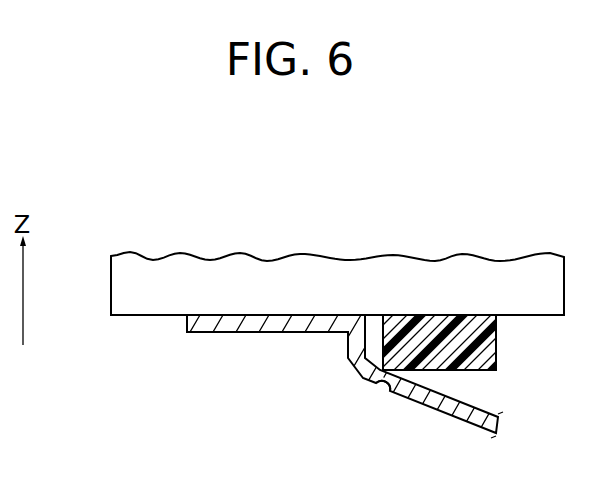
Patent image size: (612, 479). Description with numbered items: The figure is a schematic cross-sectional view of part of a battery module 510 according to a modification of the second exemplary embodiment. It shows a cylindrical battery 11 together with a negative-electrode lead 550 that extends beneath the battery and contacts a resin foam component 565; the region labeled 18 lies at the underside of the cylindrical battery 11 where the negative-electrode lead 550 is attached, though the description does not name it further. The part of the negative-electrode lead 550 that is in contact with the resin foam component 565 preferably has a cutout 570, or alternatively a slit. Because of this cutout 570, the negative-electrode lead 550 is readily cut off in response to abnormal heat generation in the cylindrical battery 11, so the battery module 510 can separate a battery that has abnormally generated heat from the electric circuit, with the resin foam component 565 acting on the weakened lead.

The cylindrical battery 11 is at (461, 250).
The bottom surface 18 is at (146, 318).
The battery module 510 is at (329, 248).
The negative-electrode lead 550 is at (263, 336).
The resin foam component 565 is at (487, 345).
The cutout 570 is at (380, 383).